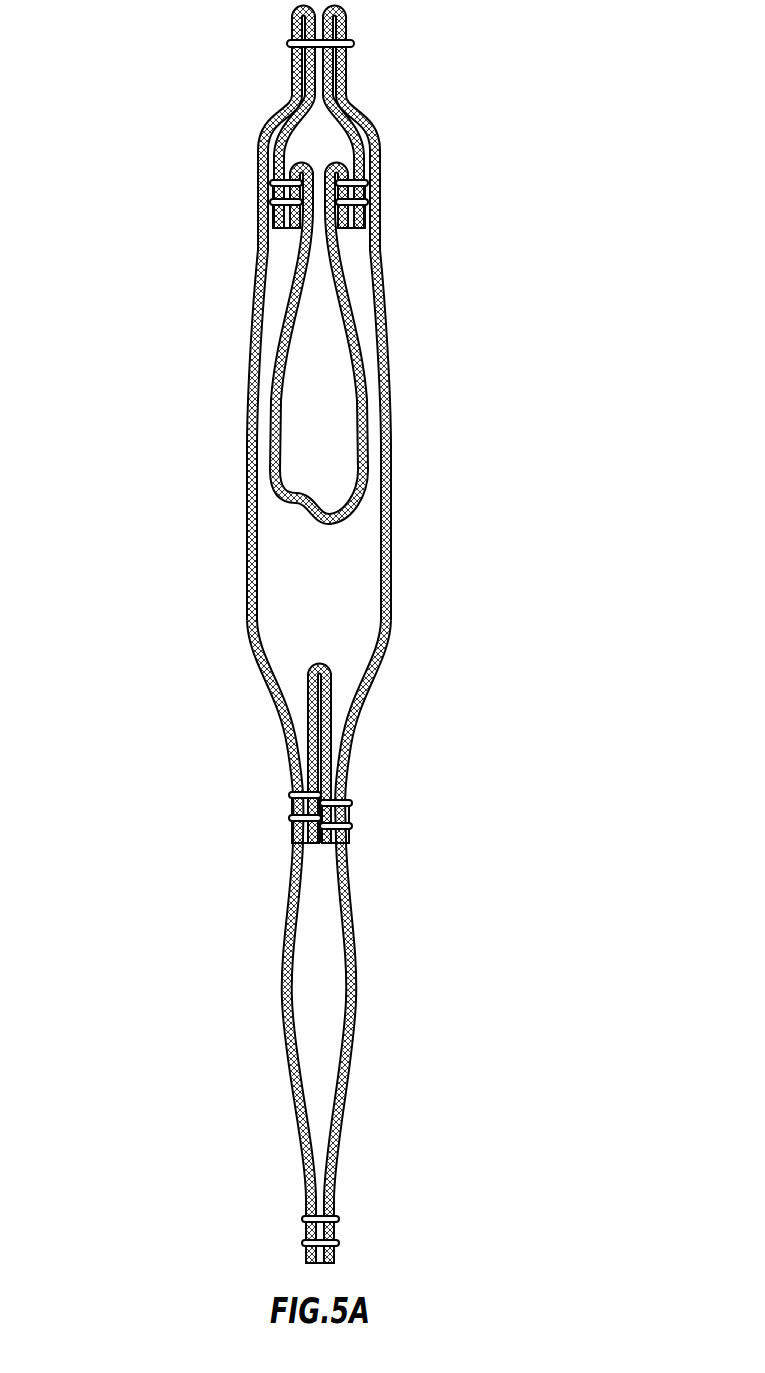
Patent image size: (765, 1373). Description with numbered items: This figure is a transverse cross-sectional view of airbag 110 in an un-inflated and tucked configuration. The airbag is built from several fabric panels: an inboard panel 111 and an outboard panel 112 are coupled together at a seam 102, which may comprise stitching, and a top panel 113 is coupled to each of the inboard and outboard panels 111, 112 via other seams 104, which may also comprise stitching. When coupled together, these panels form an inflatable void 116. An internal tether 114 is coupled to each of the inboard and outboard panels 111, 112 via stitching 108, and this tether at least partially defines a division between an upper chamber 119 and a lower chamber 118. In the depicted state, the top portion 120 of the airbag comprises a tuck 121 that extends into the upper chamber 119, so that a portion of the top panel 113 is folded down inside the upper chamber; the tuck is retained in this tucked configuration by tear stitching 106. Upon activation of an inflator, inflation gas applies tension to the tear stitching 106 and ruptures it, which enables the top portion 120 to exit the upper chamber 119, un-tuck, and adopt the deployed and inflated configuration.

The airbag 110 is at (306, 637).
The seam 102 is at (340, 1218).
The other seams 104 is at (271, 197).
The tear stitching 106 is at (351, 46).
The stitching 108 is at (289, 806).
The inboard panel 111 is at (257, 325).
The outboard panel 112 is at (385, 367).
The top panel 113 is at (355, 511).
The internal tether 114 is at (327, 708).
The inflatable void 116 is at (340, 583).
The lower chamber 118 is at (380, 1008).
The upper chamber 119 is at (364, 637).
The top portion 120 is at (268, 283).
The tuck 121 is at (304, 347).